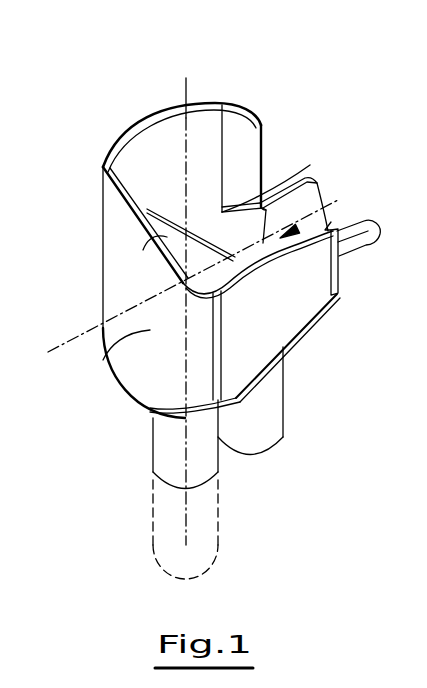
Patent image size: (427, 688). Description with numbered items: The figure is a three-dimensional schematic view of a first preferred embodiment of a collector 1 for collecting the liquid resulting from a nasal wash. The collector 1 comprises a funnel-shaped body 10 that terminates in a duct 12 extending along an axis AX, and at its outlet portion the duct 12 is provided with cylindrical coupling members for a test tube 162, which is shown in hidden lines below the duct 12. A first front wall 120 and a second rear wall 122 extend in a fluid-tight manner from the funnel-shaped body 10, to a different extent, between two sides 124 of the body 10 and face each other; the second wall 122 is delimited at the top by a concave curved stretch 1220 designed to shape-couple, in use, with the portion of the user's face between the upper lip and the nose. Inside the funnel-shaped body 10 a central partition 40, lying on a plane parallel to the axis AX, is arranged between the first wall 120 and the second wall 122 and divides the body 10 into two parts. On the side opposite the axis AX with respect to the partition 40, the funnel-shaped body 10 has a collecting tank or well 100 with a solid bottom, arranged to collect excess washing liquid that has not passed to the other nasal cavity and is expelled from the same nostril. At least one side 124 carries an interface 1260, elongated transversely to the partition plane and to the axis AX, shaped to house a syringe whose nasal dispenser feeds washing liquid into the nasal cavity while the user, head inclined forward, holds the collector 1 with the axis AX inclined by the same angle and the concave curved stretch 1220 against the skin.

The collector 1 is at (426, 80).
The funnel-shaped body 10 is at (235, 203).
The duct 12 is at (173, 447).
The central partition 40 is at (152, 250).
The collecting tank/well 100 is at (253, 410).
The first front wall 120 is at (147, 173).
The second rear wall 122 is at (270, 305).
The side 124 is at (262, 140).
The test tube 162 is at (218, 498).
The concave curved stretch 1220 is at (322, 204).
The interface 1260 is at (355, 246).
The axis AX is at (190, 92).